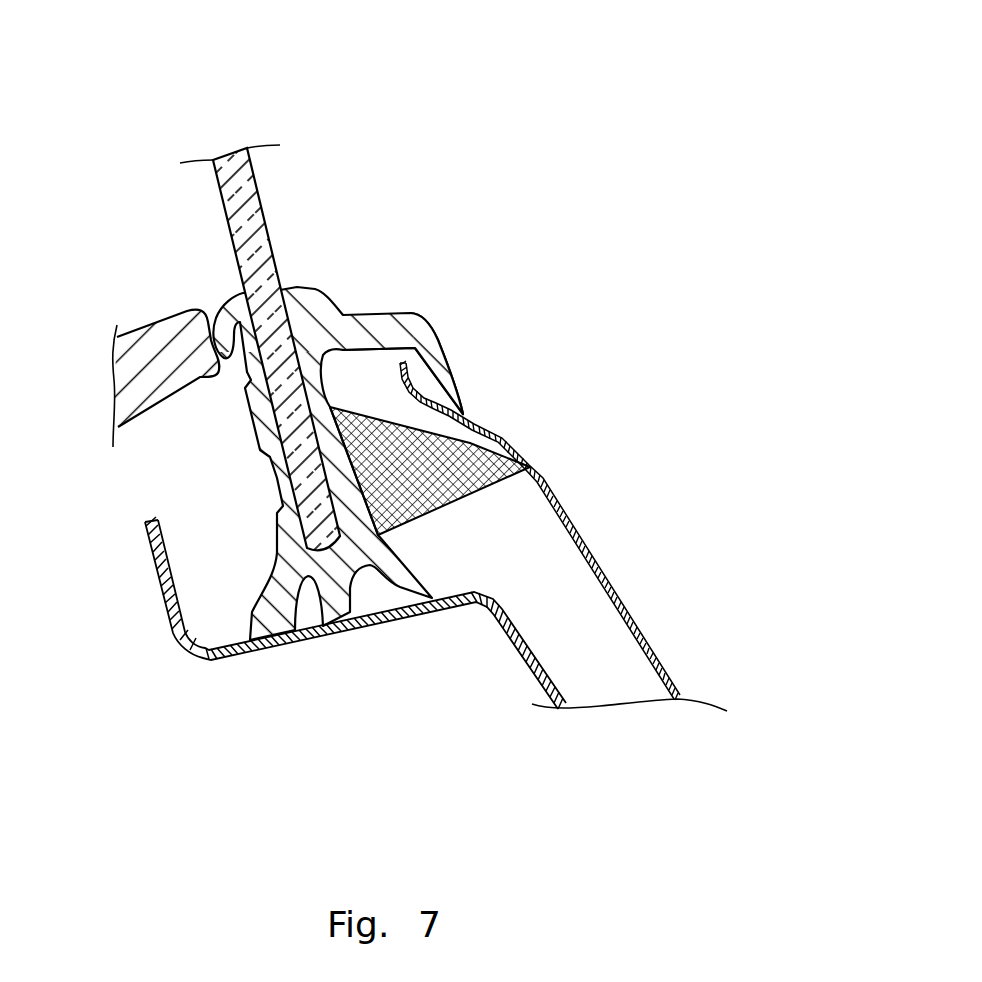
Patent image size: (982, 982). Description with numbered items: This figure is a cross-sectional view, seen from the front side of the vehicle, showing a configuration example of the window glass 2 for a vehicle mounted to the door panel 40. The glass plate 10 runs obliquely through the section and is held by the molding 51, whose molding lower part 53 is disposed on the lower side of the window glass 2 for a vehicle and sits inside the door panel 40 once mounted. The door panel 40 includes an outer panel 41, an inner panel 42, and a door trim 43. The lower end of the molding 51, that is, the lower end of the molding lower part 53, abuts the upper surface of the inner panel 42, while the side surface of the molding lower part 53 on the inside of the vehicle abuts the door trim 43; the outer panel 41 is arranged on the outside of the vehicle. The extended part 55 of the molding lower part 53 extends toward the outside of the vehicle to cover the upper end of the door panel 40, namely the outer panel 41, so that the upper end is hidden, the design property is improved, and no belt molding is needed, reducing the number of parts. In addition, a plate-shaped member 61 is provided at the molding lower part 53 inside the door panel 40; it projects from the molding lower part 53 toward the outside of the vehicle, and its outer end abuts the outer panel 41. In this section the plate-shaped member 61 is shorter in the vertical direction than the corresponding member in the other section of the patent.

The window glass for a vehicle 2 is at (177, 108).
The glass plate 10 is at (258, 182).
The door panel 40 is at (677, 373).
The outer panel 41 is at (578, 536).
The inner panel 42 is at (215, 658).
The door trim 43 is at (143, 350).
The molding 51 is at (415, 415).
The molding lower part 53 is at (298, 288).
The extended part 55 is at (435, 328).
The plate-shaped member 61 is at (498, 432).